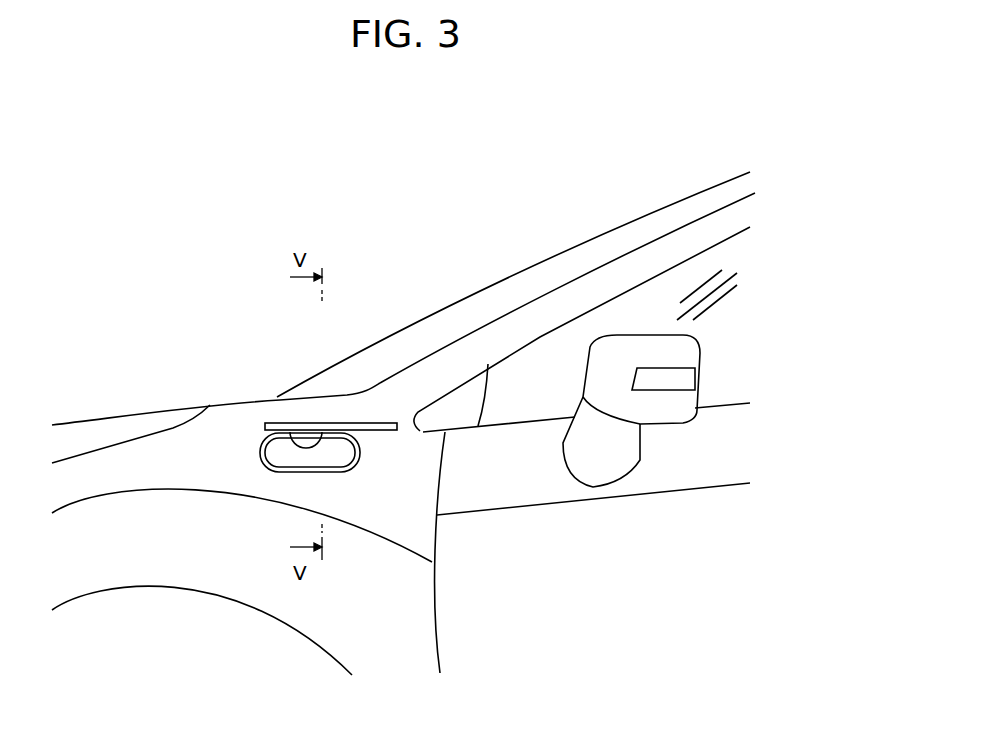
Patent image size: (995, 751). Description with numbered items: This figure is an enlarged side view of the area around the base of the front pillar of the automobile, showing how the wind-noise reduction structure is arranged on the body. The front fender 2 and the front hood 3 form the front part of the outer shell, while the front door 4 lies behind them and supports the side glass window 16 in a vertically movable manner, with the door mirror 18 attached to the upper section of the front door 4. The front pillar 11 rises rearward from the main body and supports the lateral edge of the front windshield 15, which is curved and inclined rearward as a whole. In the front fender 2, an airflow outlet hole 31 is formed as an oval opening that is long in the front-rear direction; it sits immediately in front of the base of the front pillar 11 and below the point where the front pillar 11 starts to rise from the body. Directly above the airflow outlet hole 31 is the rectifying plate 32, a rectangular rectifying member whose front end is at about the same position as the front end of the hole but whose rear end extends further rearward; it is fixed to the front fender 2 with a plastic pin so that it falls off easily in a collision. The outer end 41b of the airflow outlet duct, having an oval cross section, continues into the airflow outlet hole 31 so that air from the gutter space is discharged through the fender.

The front fender 2 is at (217, 430).
The front hood 3 is at (125, 423).
The front door 4 is at (554, 640).
The front pillar 11 is at (495, 337).
The front windshield 15 is at (557, 273).
The side glass window 16 is at (673, 280).
The door mirror 18 is at (665, 408).
The airflow outlet hole 31 is at (290, 430).
The rectifying plate 32 is at (357, 425).
The outer end (air outlet side) of airflow outlet duct 41b is at (265, 431).